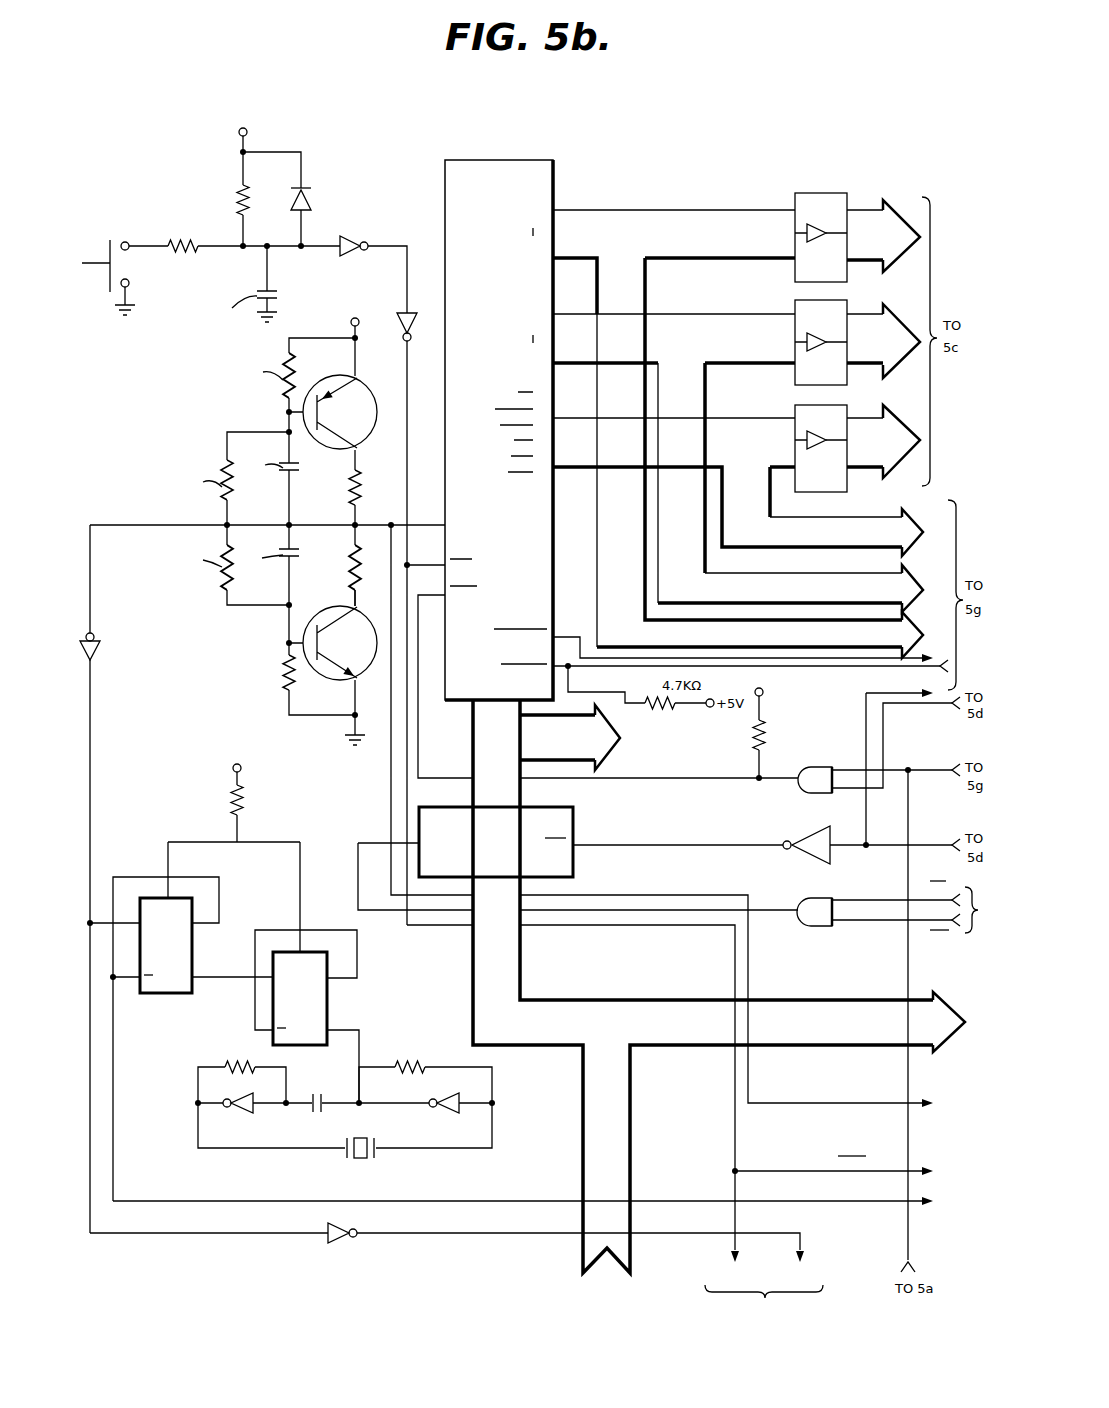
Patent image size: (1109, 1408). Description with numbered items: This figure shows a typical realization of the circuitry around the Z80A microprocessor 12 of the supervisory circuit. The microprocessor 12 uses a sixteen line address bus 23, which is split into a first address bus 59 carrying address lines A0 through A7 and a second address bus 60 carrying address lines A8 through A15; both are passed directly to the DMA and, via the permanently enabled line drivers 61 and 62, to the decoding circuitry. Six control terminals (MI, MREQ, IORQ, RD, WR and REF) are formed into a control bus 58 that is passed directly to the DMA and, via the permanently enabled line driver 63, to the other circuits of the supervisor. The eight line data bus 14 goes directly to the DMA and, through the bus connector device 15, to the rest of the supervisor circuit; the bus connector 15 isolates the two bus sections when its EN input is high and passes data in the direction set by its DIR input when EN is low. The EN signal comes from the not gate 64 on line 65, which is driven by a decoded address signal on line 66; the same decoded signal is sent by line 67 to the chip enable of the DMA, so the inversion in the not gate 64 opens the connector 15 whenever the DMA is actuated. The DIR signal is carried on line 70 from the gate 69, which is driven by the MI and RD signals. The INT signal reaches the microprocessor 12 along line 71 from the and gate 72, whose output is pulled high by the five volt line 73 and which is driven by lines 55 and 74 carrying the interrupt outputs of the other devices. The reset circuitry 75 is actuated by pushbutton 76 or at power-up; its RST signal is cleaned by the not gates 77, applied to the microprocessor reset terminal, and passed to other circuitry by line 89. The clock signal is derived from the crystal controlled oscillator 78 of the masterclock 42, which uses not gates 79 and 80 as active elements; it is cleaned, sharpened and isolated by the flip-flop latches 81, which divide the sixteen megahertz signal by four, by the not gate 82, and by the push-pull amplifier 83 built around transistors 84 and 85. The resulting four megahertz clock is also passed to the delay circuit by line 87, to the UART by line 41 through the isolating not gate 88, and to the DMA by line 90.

The microprocessor 12 is at (533, 170).
The data bus 14 is at (617, 754).
The bus connector device 15 is at (568, 824).
The address bus 23 is at (915, 160).
The line 41 is at (655, 1235).
The masterclock 42 is at (371, 1114).
The line 55 is at (918, 770).
The control bus 58 is at (733, 419).
The first address bus 59 is at (638, 216).
The second address bus 60 is at (676, 316).
The line driver 61 is at (812, 197).
The line driver 62 is at (838, 314).
The line driver 63 is at (838, 419).
The not gate 64 is at (826, 830).
The line 65 is at (652, 852).
The line 66 is at (914, 845).
The line 67 is at (865, 700).
The gate 69 is at (822, 898).
The line 70 is at (358, 863).
The line 71 is at (634, 781).
The and gate 72 is at (823, 768).
The 5 V line 73 is at (763, 706).
The line 74 is at (893, 704).
The reset circuitry 75 is at (356, 134).
The pushbutton 76 is at (101, 250).
The not gates 77 is at (398, 312).
The crystal controlled oscillator 78 is at (365, 1136).
The not gate 79 is at (238, 1112).
The not gate 80 is at (438, 1114).
The flip-flop latches 81 is at (194, 958).
The not gate 82 is at (101, 644).
The push-pull amplifier 83 is at (202, 424).
The transistor 84 is at (363, 397).
The transistor 85 is at (362, 672).
The line 87 is at (856, 1203).
The isolating not gate 88 is at (338, 1240).
The line 89 is at (408, 435).
The line 90 is at (391, 795).